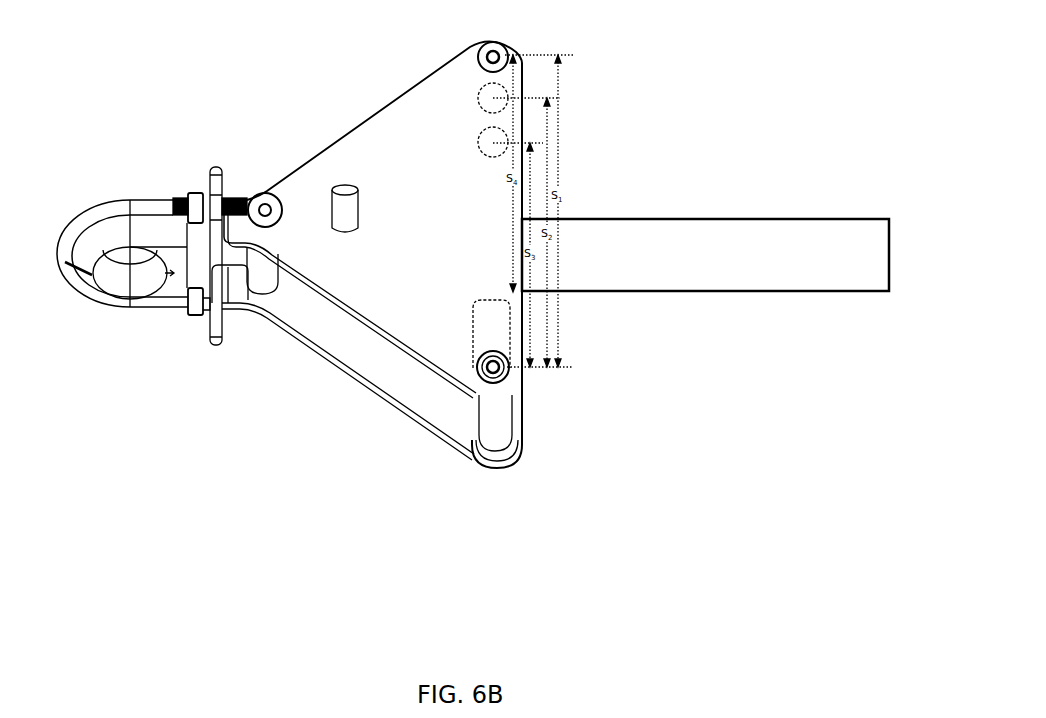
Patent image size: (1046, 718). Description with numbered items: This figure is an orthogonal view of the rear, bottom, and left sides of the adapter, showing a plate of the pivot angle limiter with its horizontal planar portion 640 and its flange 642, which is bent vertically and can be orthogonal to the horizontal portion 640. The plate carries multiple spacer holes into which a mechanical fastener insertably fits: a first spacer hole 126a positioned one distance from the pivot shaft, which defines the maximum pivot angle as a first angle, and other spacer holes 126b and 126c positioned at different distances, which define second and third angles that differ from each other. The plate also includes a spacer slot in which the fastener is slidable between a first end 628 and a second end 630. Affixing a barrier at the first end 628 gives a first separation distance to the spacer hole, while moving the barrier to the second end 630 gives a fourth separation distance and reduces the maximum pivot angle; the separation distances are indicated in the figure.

The first spacer hole 126a is at (493, 41).
The spacer hole 126b is at (478, 100).
The spacer hole 126c is at (478, 144).
The first end of the slot 628 is at (502, 387).
The second end of the slot 630 is at (497, 268).
The horizontal planar portion 640 is at (292, 342).
The flange 642 is at (203, 332).